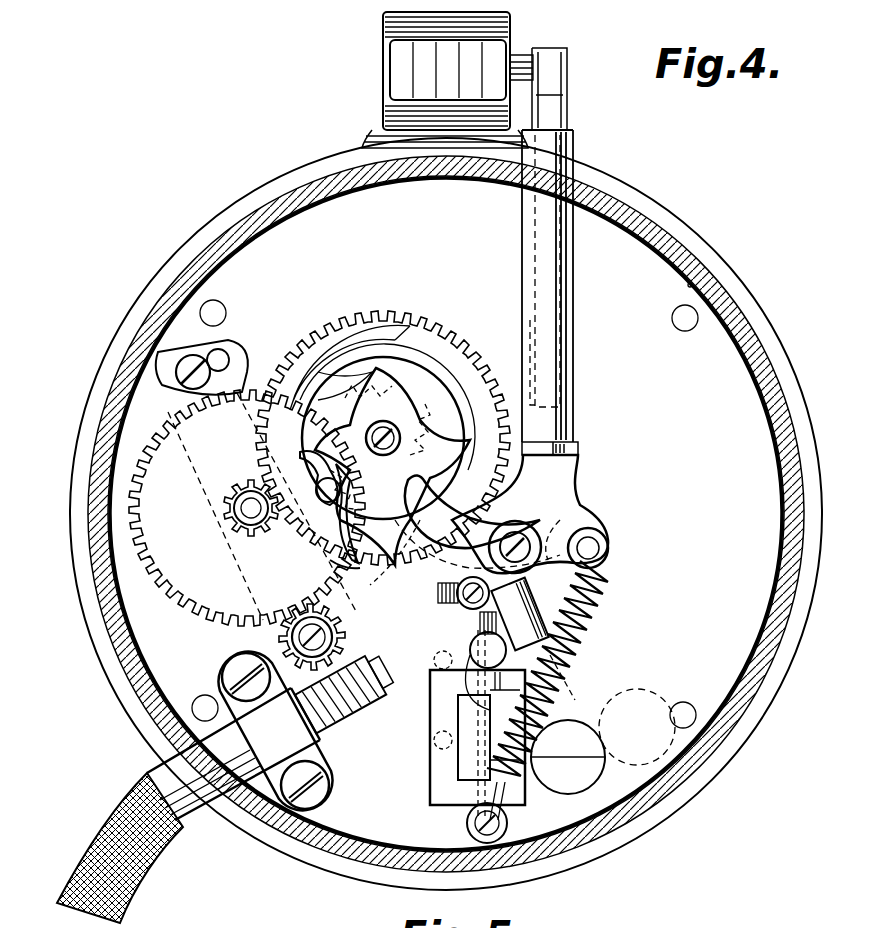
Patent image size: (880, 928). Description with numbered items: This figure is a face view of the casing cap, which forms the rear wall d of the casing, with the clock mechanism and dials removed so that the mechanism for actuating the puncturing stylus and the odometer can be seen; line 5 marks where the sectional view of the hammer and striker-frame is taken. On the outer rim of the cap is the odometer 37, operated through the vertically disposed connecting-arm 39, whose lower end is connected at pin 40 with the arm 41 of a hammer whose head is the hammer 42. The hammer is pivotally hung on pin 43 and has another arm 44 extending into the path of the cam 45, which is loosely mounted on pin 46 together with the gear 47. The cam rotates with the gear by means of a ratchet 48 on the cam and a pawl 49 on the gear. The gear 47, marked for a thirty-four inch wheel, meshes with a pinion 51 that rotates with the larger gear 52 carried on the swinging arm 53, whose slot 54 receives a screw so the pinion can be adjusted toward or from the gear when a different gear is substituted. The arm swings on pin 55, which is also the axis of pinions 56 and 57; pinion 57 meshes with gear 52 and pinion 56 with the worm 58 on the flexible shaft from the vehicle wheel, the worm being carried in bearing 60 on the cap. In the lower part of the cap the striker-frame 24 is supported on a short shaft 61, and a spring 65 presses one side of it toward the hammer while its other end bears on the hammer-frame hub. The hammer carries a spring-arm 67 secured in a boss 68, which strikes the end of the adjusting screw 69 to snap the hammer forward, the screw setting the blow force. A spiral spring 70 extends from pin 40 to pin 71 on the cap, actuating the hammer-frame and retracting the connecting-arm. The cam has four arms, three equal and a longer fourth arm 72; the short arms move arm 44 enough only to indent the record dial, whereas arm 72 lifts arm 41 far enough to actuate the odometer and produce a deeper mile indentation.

The casing hole a is at (690, 283).
The rear wall d is at (788, 330).
The section line 5 is at (398, 421).
The striker-frame 24 is at (432, 778).
The odometer 37 is at (373, 92).
The connecting-arm 39 is at (557, 262).
The pin 40 is at (607, 548).
The arm of hammer 41 is at (568, 520).
The hammer 42 is at (580, 730).
The pin 43 is at (513, 532).
The arm of hammer-frame 44 is at (372, 577).
The cam 45 is at (475, 378).
The pin 46 is at (404, 430).
The gear 47 is at (386, 302).
The ratchet 48 is at (340, 398).
The pawl 49 is at (314, 468).
The pinion 51 is at (235, 512).
The gear 52 is at (195, 596).
The swinging arm 53 is at (242, 378).
The slot 54 is at (233, 375).
The pin 55 is at (298, 626).
The pinion 56 is at (357, 577).
The pinion 57 is at (330, 637).
The worm 58 is at (334, 727).
The bearing 60 is at (263, 745).
The short shaft 61 is at (486, 800).
The spring 65 is at (468, 640).
The spring-arm 67 is at (580, 704).
The boss 68 is at (519, 614).
The adjusting screw 69 is at (442, 593).
The spiral spring 70 is at (592, 603).
The pin 71 is at (485, 850).
The fourth arm of cam 72 is at (361, 513).